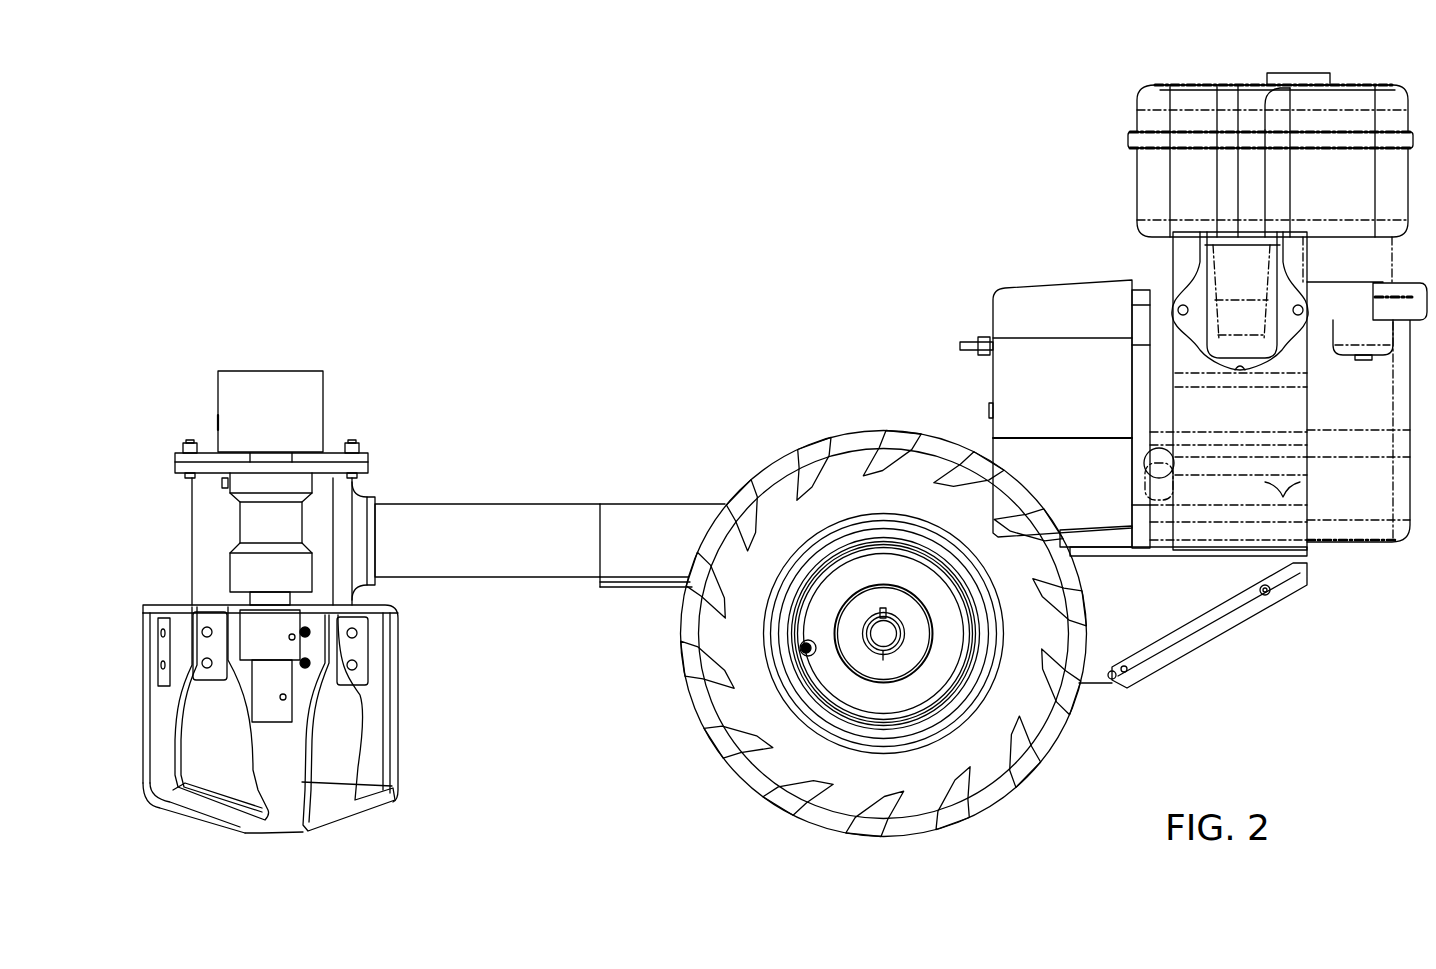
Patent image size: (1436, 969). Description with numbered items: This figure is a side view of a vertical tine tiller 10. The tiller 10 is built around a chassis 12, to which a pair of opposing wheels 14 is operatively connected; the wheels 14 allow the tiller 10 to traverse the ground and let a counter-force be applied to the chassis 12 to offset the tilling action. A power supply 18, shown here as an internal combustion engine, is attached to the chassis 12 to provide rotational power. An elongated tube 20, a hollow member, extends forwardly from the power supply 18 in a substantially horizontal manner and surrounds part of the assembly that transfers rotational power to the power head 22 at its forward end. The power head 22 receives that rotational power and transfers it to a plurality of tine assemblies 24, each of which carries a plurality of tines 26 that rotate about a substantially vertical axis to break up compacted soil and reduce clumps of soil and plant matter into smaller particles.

The vertical tine tiller 10 is at (581, 233).
The chassis 12 is at (1173, 605).
The wheels 14 is at (985, 762).
The power supply 18 is at (1172, 261).
The elongated tube 20 is at (503, 543).
The power head 22 is at (250, 360).
The tine assembly 24 is at (266, 856).
The tines 26 is at (153, 724).